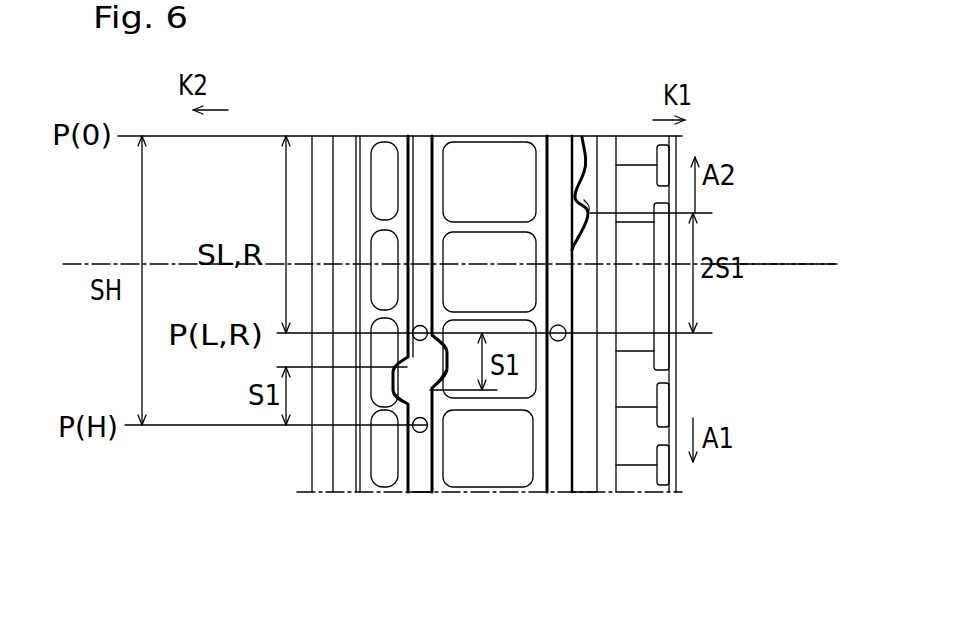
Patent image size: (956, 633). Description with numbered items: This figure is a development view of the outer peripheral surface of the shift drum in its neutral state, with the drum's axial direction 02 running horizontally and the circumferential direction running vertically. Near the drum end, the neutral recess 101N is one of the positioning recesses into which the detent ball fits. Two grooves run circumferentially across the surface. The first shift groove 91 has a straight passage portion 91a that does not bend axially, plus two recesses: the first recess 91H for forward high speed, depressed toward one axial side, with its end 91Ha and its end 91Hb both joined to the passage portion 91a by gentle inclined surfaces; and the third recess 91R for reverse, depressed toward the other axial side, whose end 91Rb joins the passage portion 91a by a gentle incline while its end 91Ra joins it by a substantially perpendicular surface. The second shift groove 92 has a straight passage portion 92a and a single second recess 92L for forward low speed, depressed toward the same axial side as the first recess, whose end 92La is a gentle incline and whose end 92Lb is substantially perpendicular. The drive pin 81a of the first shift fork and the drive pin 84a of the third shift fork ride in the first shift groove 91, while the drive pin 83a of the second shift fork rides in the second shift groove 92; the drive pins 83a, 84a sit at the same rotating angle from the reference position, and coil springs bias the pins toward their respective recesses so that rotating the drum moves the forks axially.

The neutral recess 101N is at (333, 135).
The first shift groove 91 is at (425, 136).
The second shift groove 92 is at (562, 136).
The second recess 92L is at (582, 137).
The end of second recess in direction of arrow A2 92Lb is at (586, 207).
The end of second recess 92La is at (573, 243).
The drive pin of second shift fork 83a is at (555, 326).
The drive pin of third shift fork 84a is at (420, 325).
The drive pin of first shift fork 81a is at (428, 430).
The end of third recess in direction of arrow A2 91Rb is at (405, 358).
The third recess 91R is at (393, 382).
The end of third recess in direction of arrow A1 91Ra is at (400, 400).
The passage portion 91a is at (417, 490).
The end of first recess in direction of arrow A2 91Hb is at (442, 336).
The first recess 91H is at (452, 338).
The end of first recess in direction of arrow A1 91Ha is at (462, 340).
The passage portion 92a is at (583, 493).
The axial direction 02 is at (793, 265).